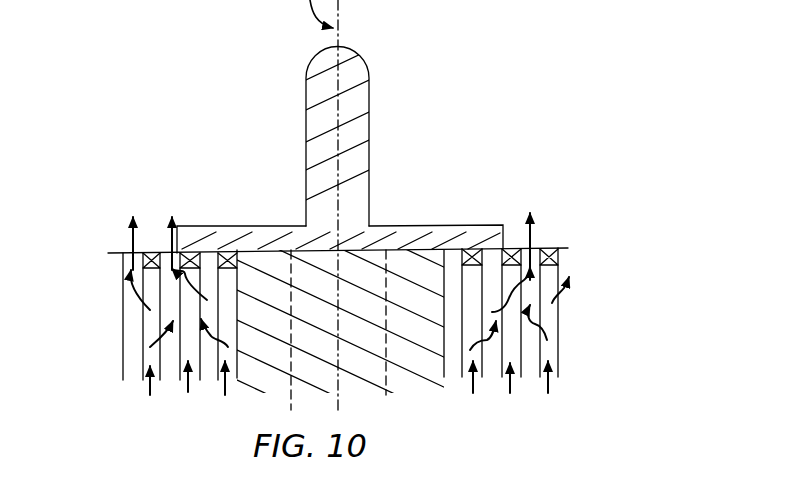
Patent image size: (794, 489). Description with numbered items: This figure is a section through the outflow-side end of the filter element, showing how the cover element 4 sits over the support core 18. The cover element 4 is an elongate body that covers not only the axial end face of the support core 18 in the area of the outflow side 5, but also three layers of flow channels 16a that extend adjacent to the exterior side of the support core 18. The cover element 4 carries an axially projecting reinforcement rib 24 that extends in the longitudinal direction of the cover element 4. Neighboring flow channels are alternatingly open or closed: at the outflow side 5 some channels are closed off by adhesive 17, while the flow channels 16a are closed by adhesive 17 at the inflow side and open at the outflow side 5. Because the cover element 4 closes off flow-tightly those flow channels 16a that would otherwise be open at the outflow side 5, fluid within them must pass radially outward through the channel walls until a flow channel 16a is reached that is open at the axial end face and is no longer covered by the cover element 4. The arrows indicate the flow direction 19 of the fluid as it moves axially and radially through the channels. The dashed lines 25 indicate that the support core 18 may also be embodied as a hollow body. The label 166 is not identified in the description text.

The reinforcement rib 24 is at (352, 115).
The cover element 4 is at (450, 237).
The outflow side 5 is at (557, 242).
The adhesive 17 is at (572, 254).
The tube wall 166 is at (150, 310).
The flow channels 16a is at (137, 350).
The flow direction 19 is at (150, 388).
The dashed lines 25 is at (295, 389).
The support core 18 is at (420, 380).